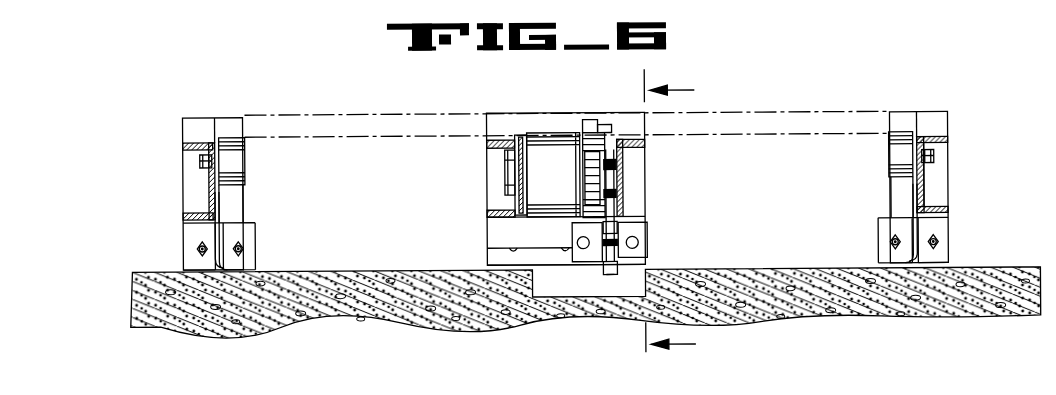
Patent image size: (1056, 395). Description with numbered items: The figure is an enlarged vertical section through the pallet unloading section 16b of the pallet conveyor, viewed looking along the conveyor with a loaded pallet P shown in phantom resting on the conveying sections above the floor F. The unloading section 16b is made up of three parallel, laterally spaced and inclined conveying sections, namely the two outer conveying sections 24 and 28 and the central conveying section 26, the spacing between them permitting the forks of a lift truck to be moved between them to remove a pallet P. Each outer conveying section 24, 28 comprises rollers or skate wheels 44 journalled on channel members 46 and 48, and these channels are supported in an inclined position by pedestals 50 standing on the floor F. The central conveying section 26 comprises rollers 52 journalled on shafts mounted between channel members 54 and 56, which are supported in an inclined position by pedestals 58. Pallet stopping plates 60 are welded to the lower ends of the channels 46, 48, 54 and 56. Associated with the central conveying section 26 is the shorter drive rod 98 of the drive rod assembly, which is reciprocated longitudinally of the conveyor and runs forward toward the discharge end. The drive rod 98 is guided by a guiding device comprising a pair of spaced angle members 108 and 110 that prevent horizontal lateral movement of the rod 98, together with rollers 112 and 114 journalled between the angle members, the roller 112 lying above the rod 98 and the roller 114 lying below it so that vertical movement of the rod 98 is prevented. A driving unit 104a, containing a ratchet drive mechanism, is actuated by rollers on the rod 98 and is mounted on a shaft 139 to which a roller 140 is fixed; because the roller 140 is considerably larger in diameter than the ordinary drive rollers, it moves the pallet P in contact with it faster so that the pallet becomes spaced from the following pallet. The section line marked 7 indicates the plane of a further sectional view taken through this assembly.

The floor F is at (146, 271).
The pallet P is at (793, 112).
The section line 7- 7 is at (678, 212).
The pallet unloading section 16b is at (933, 140).
The outer conveying section 24 is at (198, 143).
The central conveying section 26 is at (500, 141).
The outer conveying section 28 is at (925, 188).
The rollers or skate wheels 44 is at (232, 157).
The channel member 46 is at (212, 182).
The channel member 48 is at (925, 172).
The pedestals 50 is at (193, 236).
The rollers 52 is at (526, 137).
The channel member 54 is at (515, 202).
The channel member 56 is at (642, 145).
The pedestals 58 is at (500, 258).
The pallet stopping plates 60 is at (198, 133).
The drive rod 98 is at (650, 251).
The driving unit 104a is at (612, 178).
The angle member 108 is at (572, 238).
The angle member 110 is at (633, 225).
The roller 112 is at (623, 206).
The roller 114 is at (610, 276).
The shaft 139 is at (508, 176).
The roller 140 is at (566, 158).